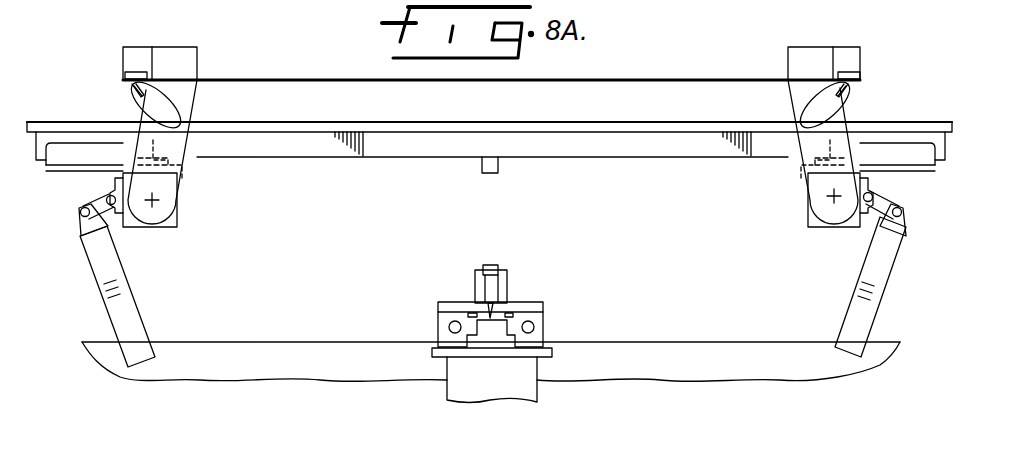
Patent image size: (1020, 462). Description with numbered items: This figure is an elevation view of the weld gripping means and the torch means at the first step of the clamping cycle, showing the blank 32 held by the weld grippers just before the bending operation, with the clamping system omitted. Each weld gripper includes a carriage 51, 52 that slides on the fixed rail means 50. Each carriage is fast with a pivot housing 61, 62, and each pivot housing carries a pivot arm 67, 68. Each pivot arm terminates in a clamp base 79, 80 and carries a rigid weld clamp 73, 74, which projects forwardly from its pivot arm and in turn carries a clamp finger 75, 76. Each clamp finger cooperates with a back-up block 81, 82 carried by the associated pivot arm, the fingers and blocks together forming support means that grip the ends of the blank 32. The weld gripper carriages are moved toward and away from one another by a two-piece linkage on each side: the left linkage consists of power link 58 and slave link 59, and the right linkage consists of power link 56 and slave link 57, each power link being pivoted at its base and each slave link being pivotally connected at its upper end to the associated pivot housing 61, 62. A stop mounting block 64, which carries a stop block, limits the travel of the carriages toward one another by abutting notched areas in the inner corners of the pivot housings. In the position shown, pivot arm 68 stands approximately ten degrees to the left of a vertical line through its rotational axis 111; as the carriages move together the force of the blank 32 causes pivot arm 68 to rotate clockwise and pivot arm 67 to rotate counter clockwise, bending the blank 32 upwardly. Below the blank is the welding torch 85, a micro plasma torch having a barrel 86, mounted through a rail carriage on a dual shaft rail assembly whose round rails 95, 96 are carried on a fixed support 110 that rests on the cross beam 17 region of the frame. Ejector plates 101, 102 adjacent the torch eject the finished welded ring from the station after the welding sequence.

The cross beam 17 is at (680, 376).
The blank 32 is at (333, 68).
The fixed rail means 50 is at (623, 159).
The carriage 51 is at (944, 172).
The carriage 52 is at (48, 172).
The power link 56 is at (850, 308).
The slave link 57 is at (884, 202).
The power link 58 is at (136, 318).
The slave link 59 is at (102, 197).
The pivot housing 61 is at (178, 222).
The pivot housing 62 is at (806, 224).
The stop mounting block 64 is at (490, 176).
The pivot arm 67 is at (186, 168).
The pivot arm 68 is at (800, 168).
The weld clamp 73 is at (177, 113).
The weld clamp 74 is at (806, 110).
The clamp finger 75 is at (131, 93).
The clamp finger 76 is at (840, 92).
The clamp base 79 is at (183, 47).
The clamp base 80 is at (808, 47).
The back-up block 81 is at (135, 72).
The back-up block 82 is at (858, 72).
The welding torch 85 is at (509, 264).
The barrel 86 is at (486, 290).
The rail 95 is at (530, 327).
The rail 96 is at (453, 327).
The ejector plate 101 is at (470, 312).
The ejector plate 102 is at (512, 312).
The fixed support 110 is at (512, 387).
The rotational axis 111 is at (834, 200).